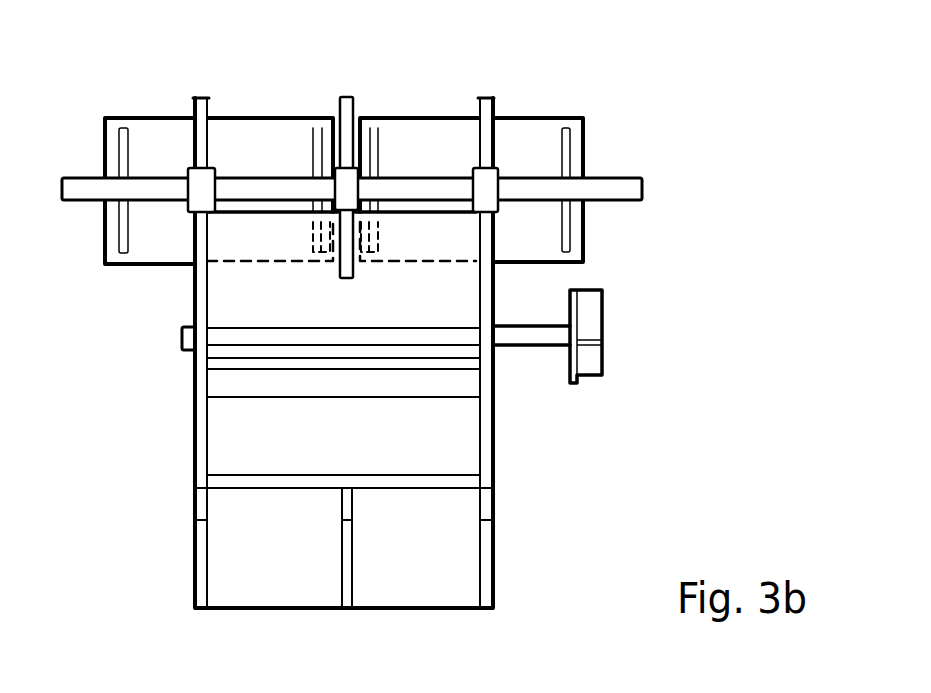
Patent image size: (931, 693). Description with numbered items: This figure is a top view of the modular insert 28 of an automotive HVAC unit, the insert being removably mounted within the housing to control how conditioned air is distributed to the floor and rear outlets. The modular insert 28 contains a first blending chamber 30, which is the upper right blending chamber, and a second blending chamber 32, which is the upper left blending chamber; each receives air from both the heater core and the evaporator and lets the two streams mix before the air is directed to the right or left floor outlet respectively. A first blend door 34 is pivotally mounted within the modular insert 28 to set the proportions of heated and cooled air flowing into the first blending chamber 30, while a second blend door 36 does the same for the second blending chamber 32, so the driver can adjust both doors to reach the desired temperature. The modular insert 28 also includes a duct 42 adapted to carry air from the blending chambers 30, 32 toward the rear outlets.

The modular insert 28 is at (182, 539).
The first blending chamber 30 is at (425, 235).
The second blending chamber 32 is at (258, 240).
The first blend door 34 is at (520, 158).
The second blend door 36 is at (163, 155).
The duct 42 is at (291, 452).